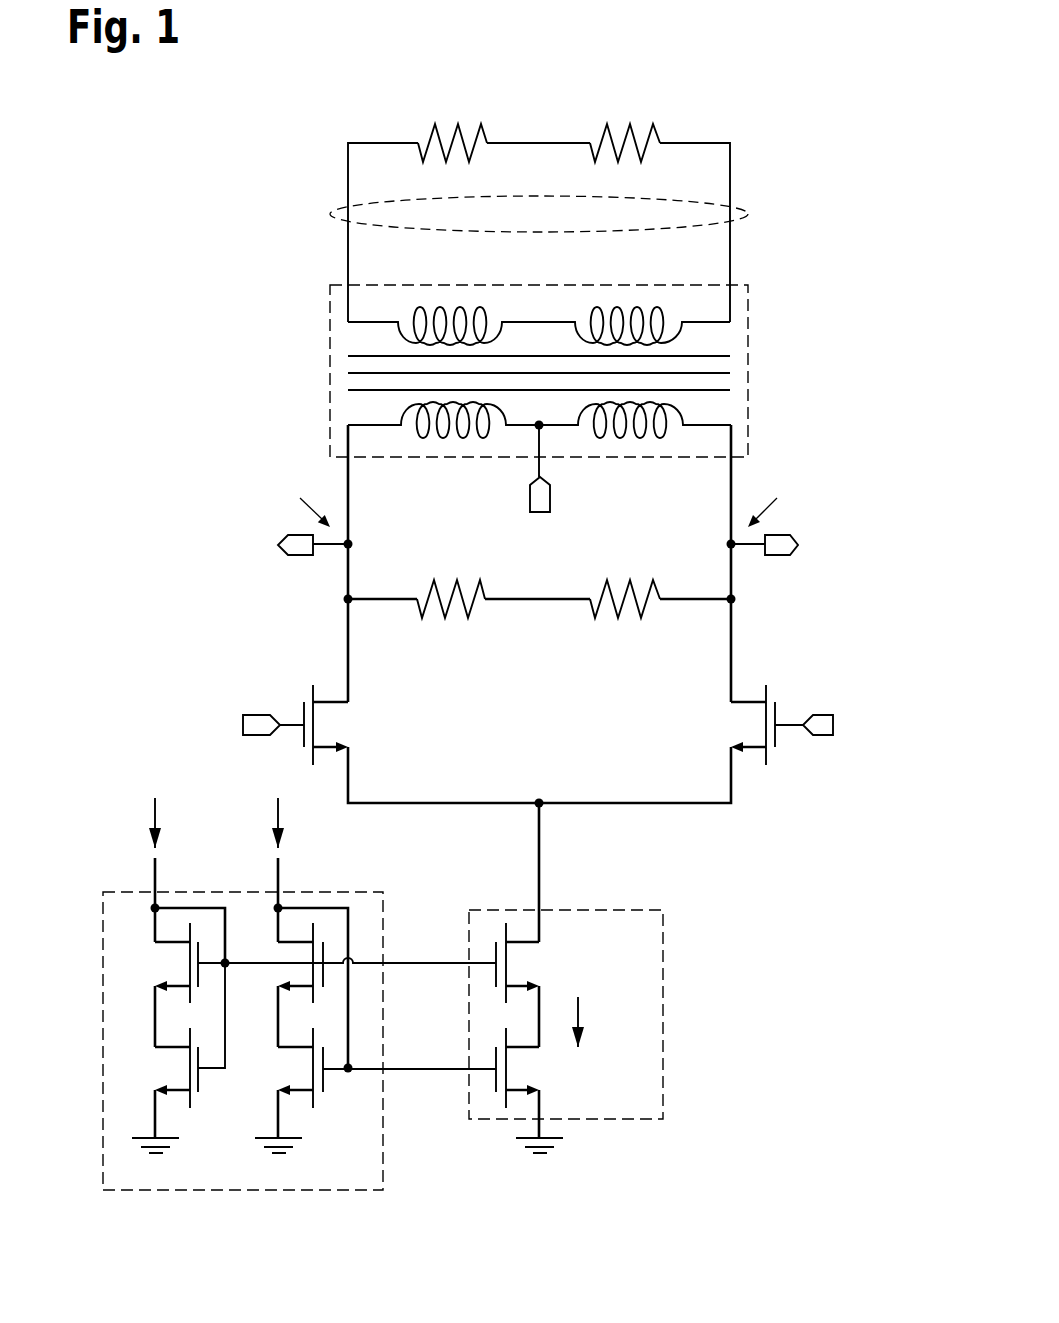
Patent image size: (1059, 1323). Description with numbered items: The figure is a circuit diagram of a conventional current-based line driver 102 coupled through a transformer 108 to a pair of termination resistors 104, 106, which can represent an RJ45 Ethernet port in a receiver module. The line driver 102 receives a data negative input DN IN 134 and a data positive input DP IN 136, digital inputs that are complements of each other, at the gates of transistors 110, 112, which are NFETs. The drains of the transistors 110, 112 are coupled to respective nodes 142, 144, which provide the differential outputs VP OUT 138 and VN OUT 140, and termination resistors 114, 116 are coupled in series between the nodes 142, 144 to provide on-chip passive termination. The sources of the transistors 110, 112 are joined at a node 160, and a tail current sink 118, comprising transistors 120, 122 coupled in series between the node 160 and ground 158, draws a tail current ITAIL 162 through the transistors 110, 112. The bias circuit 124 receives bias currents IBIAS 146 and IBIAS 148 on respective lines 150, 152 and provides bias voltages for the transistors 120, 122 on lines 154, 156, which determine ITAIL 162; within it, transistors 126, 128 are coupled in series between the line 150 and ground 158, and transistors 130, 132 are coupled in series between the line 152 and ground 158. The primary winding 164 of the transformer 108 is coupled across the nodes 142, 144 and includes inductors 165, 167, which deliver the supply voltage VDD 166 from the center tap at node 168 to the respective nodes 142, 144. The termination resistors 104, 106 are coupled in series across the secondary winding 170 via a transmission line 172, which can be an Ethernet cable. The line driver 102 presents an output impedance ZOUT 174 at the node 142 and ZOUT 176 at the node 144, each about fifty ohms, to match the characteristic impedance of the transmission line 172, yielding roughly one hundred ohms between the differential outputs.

The conventional line driver 102 is at (218, 476).
The termination resistor 104 is at (463, 132).
The termination resistor 106 is at (615, 132).
The transformer 108 is at (330, 320).
The transistor 110 is at (333, 703).
The transistor 112 is at (743, 703).
The termination resistor 114 is at (449, 590).
The termination resistor 116 is at (622, 590).
The tail current sink 118 is at (664, 1083).
The transistor 120 is at (520, 943).
The transistor 122 is at (520, 1048).
The bias circuit 124 is at (384, 1178).
The transistor 126 is at (178, 948).
The transistor 128 is at (178, 1050).
The transistor 130 is at (297, 948).
The transistor 132 is at (300, 1050).
The data negative input (DN IN) 134 is at (243, 721).
The data positive input (DP IN) 136 is at (833, 722).
The voltage positive output (VP OUT) 138 is at (290, 534).
The voltage negative output (VN OUT) 140 is at (779, 530).
The node 142 is at (345, 599).
The node 144 is at (735, 599).
The bias current (IBIAS) 146 is at (157, 812).
The bias current (IBIAS) 148 is at (280, 810).
The line 150 is at (155, 876).
The line 152 is at (280, 876).
The line 154 is at (417, 963).
The line 156 is at (417, 1069).
The ground 158 is at (167, 1132).
The node 160 is at (539, 803).
The tail current (ITAIL) 162 is at (582, 1017).
The primary winding 164 is at (705, 410).
The inductor 165 is at (440, 438).
The supply voltage (VDD) 166 is at (530, 495).
The inductor 167 is at (642, 430).
The node 168 is at (540, 401).
The secondary winding 170 is at (705, 337).
The transmission line 172 is at (330, 213).
The output impedance (ZOUT) 174 is at (322, 481).
The output impedance (ZOUT) 176 is at (828, 482).